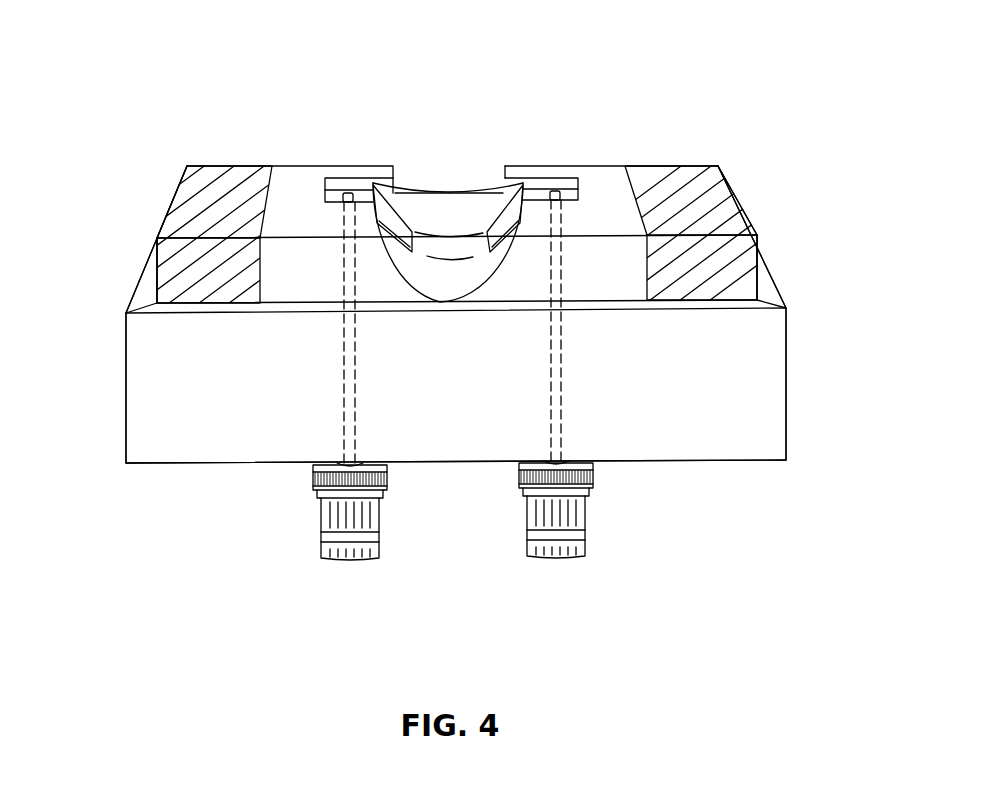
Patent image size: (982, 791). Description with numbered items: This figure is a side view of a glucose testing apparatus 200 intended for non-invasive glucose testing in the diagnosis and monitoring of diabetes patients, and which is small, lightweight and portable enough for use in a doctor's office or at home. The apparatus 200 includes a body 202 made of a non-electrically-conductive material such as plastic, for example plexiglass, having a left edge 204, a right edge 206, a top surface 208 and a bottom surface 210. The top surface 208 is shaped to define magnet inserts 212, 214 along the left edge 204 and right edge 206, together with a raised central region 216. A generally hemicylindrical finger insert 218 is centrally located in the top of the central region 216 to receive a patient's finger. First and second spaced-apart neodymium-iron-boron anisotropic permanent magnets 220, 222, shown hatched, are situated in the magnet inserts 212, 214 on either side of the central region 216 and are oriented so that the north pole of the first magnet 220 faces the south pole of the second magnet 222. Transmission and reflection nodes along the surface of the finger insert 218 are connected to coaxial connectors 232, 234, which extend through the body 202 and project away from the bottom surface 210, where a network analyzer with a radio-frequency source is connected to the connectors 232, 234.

The apparatus 200 is at (530, 82).
The body 202 is at (210, 422).
The left edge 204 is at (126, 390).
The right edge 206 is at (780, 352).
The top surface 208 is at (298, 192).
The bottom surface 210 is at (670, 463).
The magnet insert 212 is at (147, 297).
The magnet insert 214 is at (762, 287).
The raised central region 216 is at (357, 170).
The finger insert 218 is at (458, 263).
The first permanent magnet 220 is at (228, 195).
The second permanent magnet 222 is at (670, 180).
The coaxial connector 232 is at (351, 562).
The coaxial connector 234 is at (557, 560).